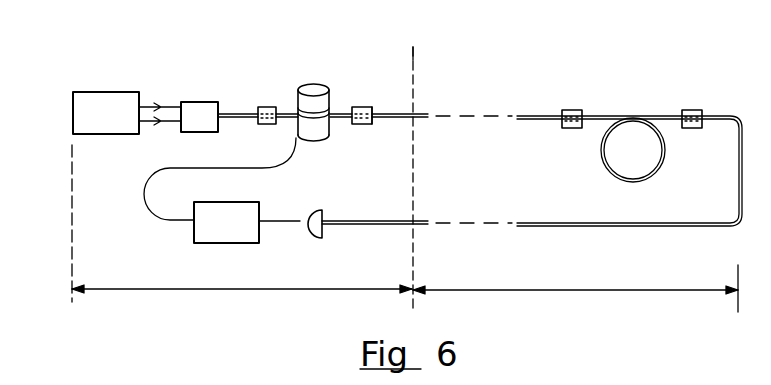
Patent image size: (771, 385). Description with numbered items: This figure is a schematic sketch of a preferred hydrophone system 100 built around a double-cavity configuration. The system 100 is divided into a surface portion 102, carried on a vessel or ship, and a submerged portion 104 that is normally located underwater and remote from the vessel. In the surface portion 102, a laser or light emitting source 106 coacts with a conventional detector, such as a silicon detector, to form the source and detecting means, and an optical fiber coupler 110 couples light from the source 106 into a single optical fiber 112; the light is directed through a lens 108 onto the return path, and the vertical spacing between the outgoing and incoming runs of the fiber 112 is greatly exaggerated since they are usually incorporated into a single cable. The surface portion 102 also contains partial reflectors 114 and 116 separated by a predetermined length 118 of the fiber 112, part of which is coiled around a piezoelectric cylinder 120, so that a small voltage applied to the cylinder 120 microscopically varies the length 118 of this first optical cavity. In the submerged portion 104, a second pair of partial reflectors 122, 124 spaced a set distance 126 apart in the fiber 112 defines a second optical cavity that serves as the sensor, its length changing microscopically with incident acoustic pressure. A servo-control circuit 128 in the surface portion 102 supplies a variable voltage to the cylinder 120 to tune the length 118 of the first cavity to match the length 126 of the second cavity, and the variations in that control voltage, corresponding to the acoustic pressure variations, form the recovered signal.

The hydrophone system 100 is at (398, 52).
The surface portion 102 is at (270, 290).
The submerged portion 104 is at (585, 293).
The laser or light emitting source 106 is at (100, 92).
The lens 108 is at (316, 210).
The optical fiber coupler 110 is at (185, 102).
The single optical fiber 112 is at (232, 113).
The partial reflector 114 is at (268, 125).
The partial reflector 116 is at (362, 124).
The predetermined length of fiber 118 is at (362, 108).
The piezoelectric cylinder 120 is at (305, 84).
The partial reflector 122 is at (572, 110).
The partial reflector 124 is at (694, 110).
The set distance of fiber 126 is at (645, 116).
The servo-control circuit 128 is at (233, 243).